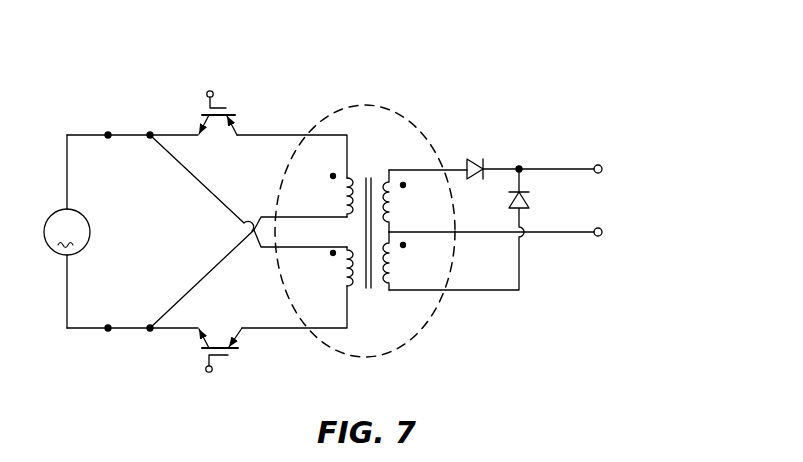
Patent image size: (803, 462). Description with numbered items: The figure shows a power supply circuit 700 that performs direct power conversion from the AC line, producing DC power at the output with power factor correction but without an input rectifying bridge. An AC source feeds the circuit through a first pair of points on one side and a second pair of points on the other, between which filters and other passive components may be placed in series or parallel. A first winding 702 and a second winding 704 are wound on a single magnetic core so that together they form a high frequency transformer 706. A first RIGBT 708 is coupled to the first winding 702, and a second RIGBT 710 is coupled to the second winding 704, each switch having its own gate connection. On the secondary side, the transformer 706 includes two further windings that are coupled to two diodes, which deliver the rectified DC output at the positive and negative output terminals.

The power supply circuit 700 is at (491, 85).
The first winding 702 is at (350, 289).
The second winding 704 is at (350, 178).
The high frequency transformer 706 is at (411, 334).
The first RIGBT 708 is at (219, 345).
The second RIGBT 710 is at (218, 119).